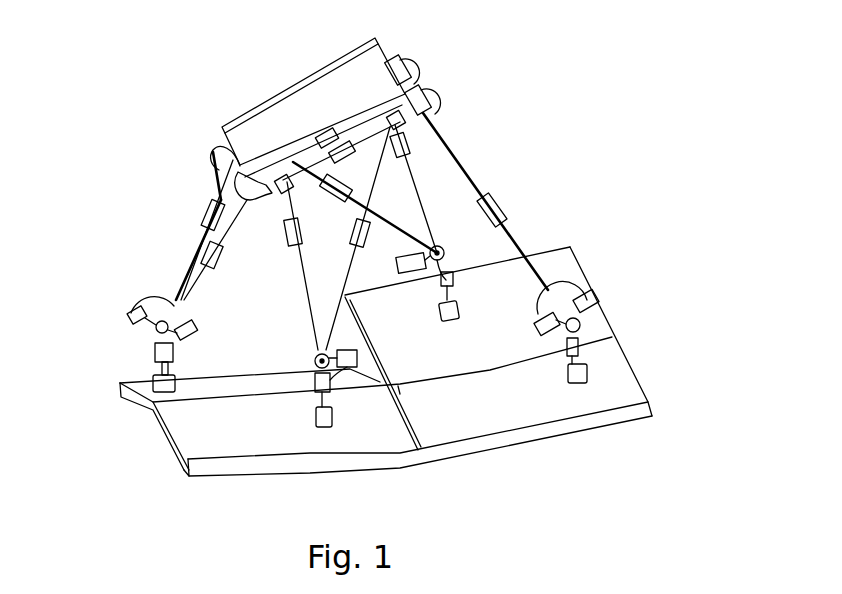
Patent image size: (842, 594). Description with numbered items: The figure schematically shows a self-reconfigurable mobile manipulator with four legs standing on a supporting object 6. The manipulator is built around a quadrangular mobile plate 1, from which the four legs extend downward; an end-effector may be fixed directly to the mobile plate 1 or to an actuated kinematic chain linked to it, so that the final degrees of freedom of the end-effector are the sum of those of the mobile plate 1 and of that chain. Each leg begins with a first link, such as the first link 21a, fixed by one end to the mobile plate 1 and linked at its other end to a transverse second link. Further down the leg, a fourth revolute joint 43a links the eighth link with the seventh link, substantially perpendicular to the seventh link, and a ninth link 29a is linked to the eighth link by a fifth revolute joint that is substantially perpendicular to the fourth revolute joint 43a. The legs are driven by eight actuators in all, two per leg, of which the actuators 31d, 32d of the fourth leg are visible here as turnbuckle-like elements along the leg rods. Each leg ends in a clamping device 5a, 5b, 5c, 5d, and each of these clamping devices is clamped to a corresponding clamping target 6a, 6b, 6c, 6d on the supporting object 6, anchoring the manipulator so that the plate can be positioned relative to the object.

The mobile plate 1 is at (370, 100).
The first link 21a is at (318, 134).
The actuator 31d is at (201, 208).
The actuator 32d is at (201, 251).
The clamping device 5a is at (316, 421).
The clamping device 5b is at (587, 364).
The clamping device 5c is at (456, 304).
The clamping device 5d is at (156, 373).
The supporting object 6 is at (648, 418).
The clamping target 6a is at (187, 474).
The clamping target 6b is at (626, 392).
The clamping target 6c is at (556, 263).
The clamping target 6d is at (126, 393).
The ninth link 29a is at (333, 425).
The fourth revolute joint 43a is at (400, 393).